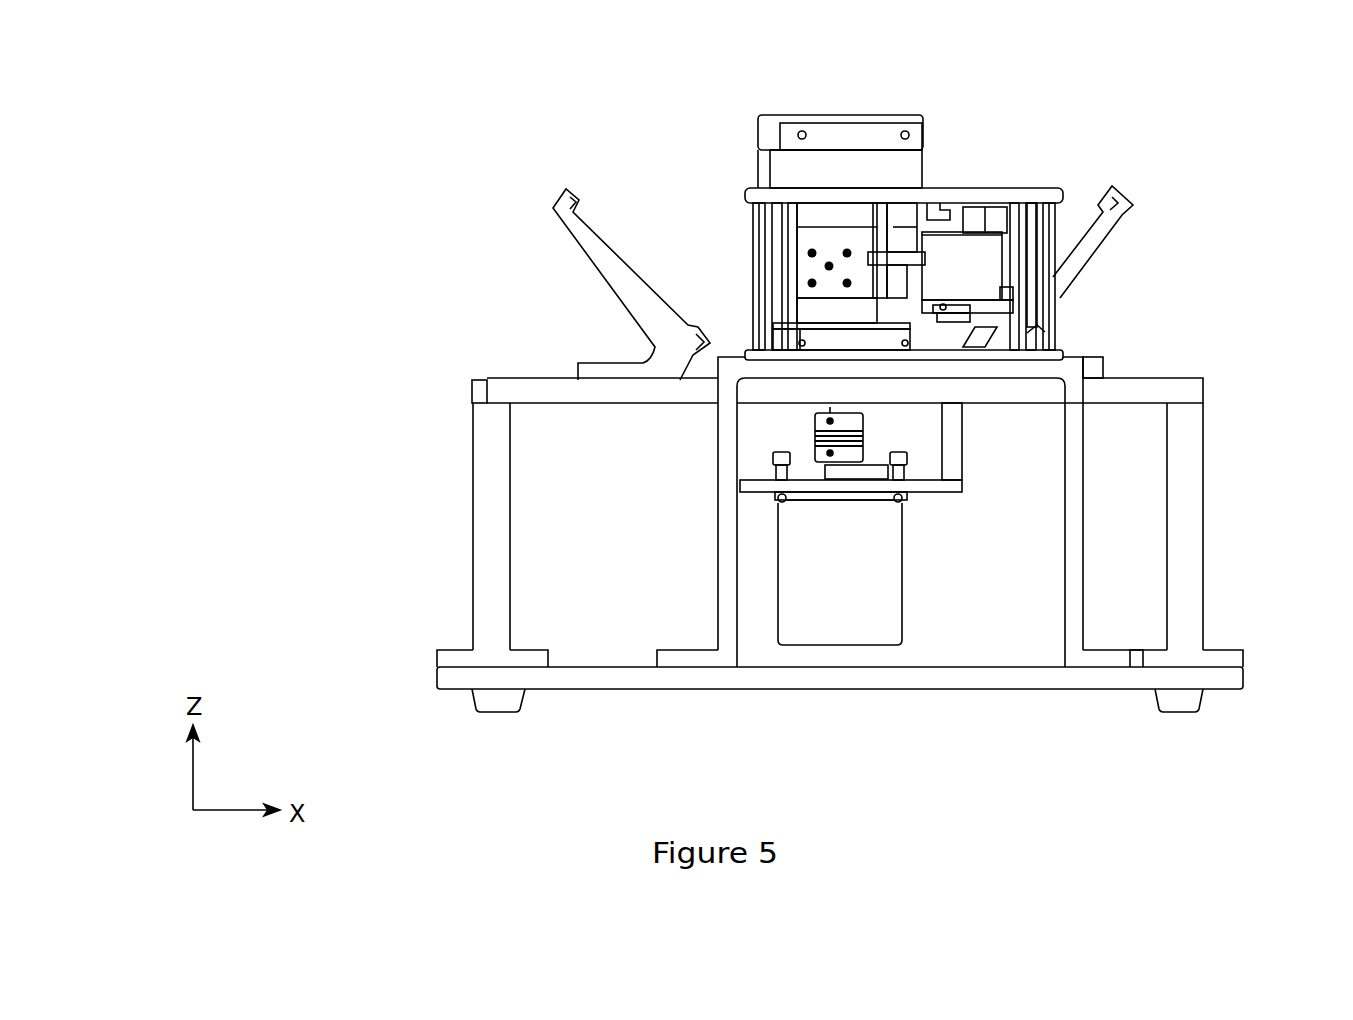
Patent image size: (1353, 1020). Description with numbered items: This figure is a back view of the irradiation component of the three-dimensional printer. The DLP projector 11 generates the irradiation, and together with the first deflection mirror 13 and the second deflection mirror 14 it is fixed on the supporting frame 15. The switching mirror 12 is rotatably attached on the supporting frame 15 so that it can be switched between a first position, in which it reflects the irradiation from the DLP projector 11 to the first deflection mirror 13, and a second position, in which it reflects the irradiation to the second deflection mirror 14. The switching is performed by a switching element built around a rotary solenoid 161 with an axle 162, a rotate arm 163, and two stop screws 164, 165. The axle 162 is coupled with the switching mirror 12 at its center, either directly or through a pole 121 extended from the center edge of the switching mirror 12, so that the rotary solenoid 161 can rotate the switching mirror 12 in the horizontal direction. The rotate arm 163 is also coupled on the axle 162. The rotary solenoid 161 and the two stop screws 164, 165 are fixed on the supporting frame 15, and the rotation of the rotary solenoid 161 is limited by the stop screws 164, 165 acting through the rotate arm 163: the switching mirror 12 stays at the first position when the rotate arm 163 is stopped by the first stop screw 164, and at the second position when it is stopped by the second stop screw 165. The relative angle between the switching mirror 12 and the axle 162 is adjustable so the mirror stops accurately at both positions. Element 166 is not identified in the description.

The DLP projector 11 is at (947, 257).
The switching mirror 12 is at (758, 130).
The first deflection mirror 13 is at (560, 222).
The second deflection mirror 14 is at (1100, 250).
The supporting frame 15 is at (490, 385).
The pole 121 is at (840, 407).
The rotary solenoid 161 is at (883, 625).
The axle 162 is at (840, 479).
The rotate arm 163 is at (870, 479).
The first stop screw 164 is at (785, 467).
The second stop screw 165 is at (900, 468).
The sensor 166 is at (825, 422).